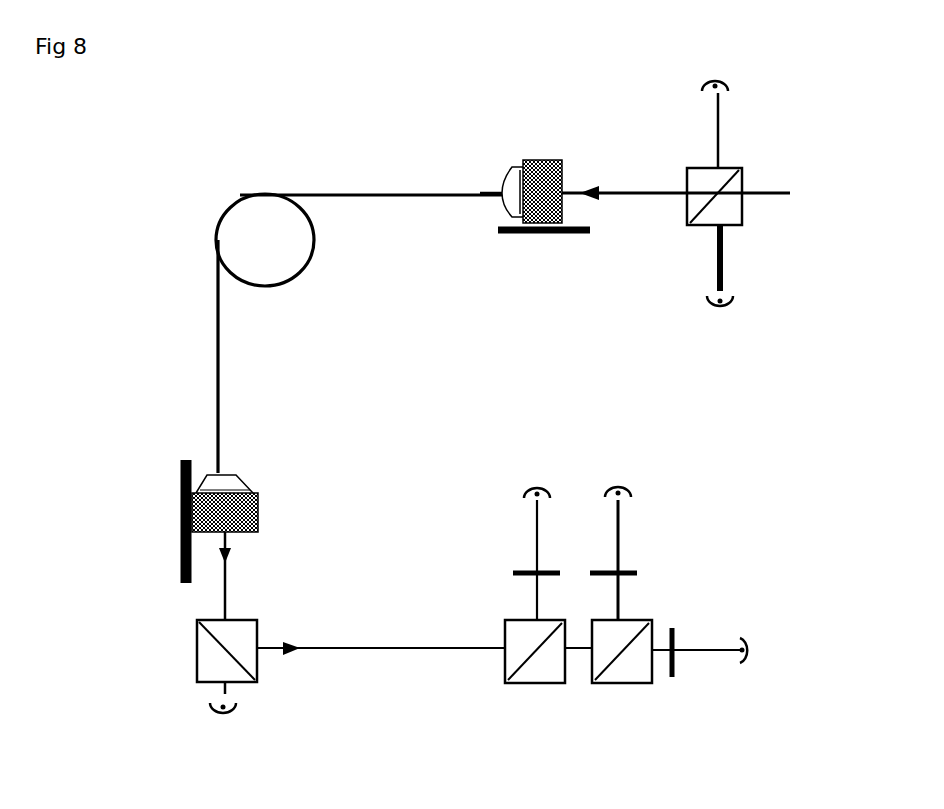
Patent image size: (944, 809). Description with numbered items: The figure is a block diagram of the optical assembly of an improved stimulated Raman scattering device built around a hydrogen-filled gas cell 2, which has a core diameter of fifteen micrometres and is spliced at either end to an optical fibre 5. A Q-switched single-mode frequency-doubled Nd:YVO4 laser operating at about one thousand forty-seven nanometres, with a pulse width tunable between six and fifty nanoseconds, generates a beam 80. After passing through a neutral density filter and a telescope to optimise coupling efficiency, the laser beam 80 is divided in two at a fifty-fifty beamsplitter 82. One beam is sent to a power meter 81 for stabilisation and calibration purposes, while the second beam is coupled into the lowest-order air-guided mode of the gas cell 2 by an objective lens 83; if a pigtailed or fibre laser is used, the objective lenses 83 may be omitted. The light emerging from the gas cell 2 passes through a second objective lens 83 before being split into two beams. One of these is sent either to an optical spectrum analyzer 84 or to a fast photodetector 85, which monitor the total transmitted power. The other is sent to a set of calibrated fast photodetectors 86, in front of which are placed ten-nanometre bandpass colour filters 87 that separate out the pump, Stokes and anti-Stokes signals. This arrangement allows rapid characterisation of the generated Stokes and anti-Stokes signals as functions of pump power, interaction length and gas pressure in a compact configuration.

The gas cell 2 is at (245, 195).
The optical fibre 5 is at (390, 202).
The beam 80 is at (689, 190).
The power meter 81 is at (728, 77).
The 50/50 beamsplitter 82 is at (737, 168).
The objective lens 83 is at (530, 158).
The optical spectrum analyzer 84 is at (351, 632).
The fast photodetector 85 is at (257, 667).
The calibrated fast photodetectors 86 is at (625, 475).
The bandpass colour filters 87 is at (615, 565).